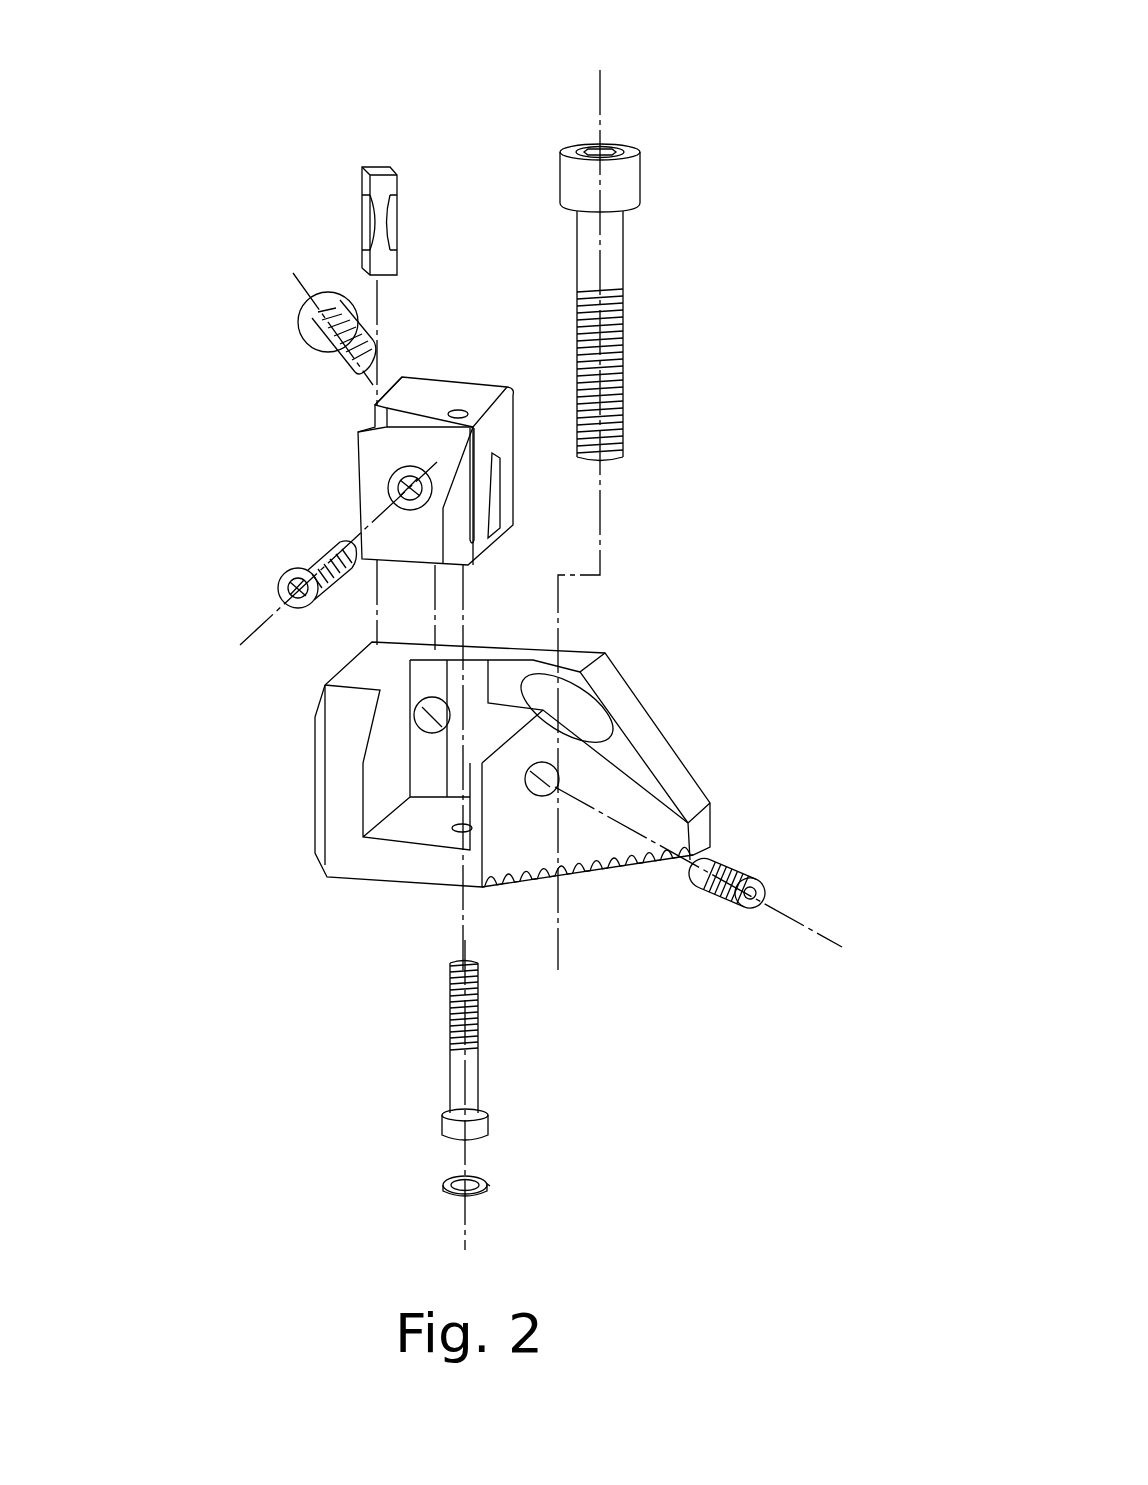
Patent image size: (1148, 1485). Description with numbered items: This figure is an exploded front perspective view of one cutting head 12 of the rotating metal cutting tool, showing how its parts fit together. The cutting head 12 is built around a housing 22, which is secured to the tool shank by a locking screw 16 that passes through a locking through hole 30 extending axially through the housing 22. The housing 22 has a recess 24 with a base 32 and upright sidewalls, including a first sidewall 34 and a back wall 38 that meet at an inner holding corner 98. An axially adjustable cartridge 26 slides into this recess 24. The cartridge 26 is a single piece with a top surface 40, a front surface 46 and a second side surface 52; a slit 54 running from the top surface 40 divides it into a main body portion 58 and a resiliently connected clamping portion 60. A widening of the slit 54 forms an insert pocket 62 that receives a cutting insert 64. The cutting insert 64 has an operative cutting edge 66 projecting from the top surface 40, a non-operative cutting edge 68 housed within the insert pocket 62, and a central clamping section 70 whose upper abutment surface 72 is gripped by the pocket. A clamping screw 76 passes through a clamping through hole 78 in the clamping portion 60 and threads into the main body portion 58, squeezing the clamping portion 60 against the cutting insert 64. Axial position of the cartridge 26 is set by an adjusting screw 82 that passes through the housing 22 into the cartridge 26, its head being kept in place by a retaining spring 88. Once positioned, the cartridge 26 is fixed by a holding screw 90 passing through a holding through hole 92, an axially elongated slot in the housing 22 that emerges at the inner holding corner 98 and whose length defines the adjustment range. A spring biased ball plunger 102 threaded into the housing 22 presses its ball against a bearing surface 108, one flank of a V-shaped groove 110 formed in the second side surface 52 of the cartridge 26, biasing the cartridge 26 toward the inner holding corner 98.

The cutting head 12 is at (285, 140).
The locking screw 16 is at (625, 183).
The housing 22 is at (680, 740).
The recess 24 is at (423, 810).
The cartridge 26 is at (447, 380).
The locking through hole 30 is at (590, 712).
The base 32 is at (443, 830).
The first sidewall 34 is at (380, 787).
The back wall 38 is at (483, 650).
The top surface 40 is at (478, 387).
The front surface 46 is at (392, 502).
The second side surface 52 is at (512, 422).
The slit 54 is at (505, 385).
The main body portion 58 is at (412, 372).
The clamping portion 60 is at (353, 453).
The insert pocket 62 is at (358, 408).
The cutting insert 64 is at (360, 196).
The operative cutting edge 66 is at (377, 165).
The non-operative cutting edge 68 is at (365, 264).
The clamping section 70 is at (358, 212).
The upper abutment surface 72 is at (368, 240).
The clamping screw 76 is at (278, 592).
The clamping through hole 78 is at (375, 562).
The adjusting screw 82 is at (460, 1083).
The retaining spring 88 is at (445, 1188).
The holding screw 90 is at (300, 320).
The holding through hole 92 is at (415, 720).
The inner holding corner 98 is at (420, 748).
The spring biased ball plunger 102 is at (755, 870).
The bearing surface 108 is at (493, 517).
The V-shaped groove 110 is at (505, 502).